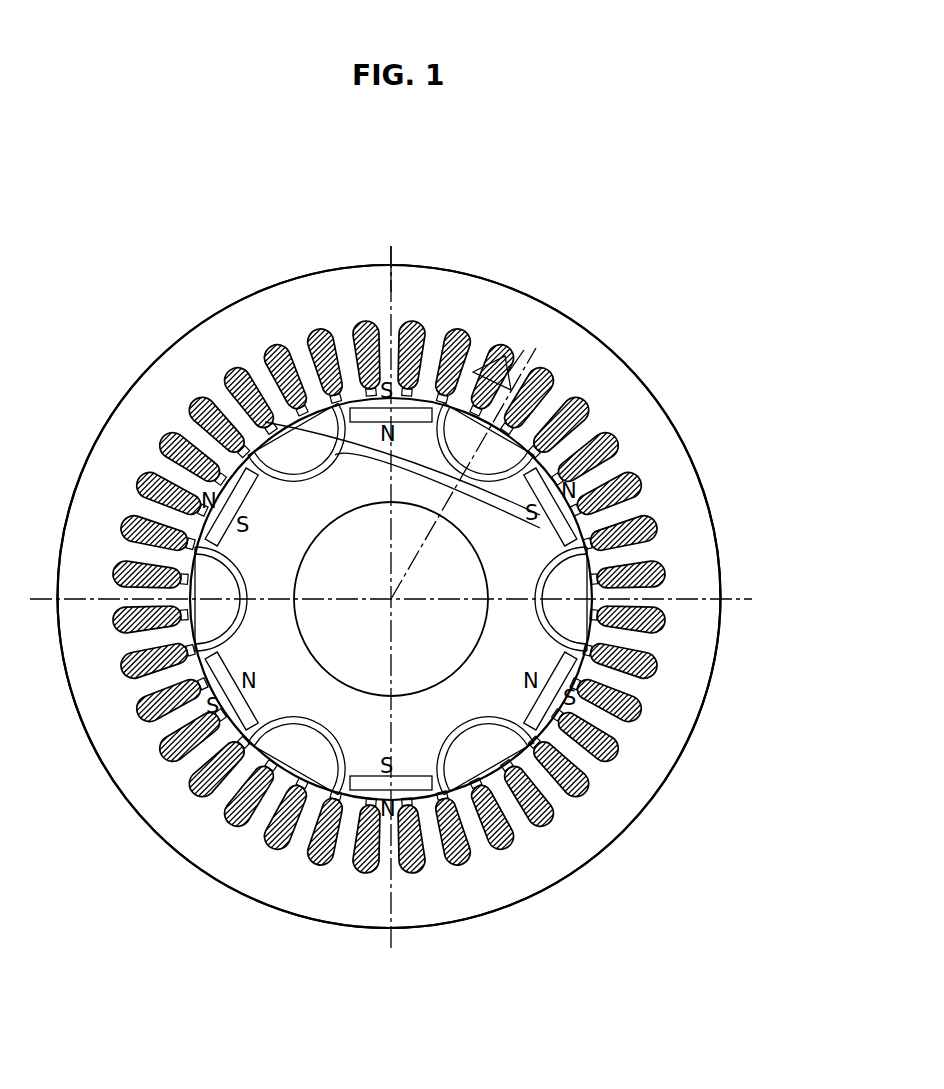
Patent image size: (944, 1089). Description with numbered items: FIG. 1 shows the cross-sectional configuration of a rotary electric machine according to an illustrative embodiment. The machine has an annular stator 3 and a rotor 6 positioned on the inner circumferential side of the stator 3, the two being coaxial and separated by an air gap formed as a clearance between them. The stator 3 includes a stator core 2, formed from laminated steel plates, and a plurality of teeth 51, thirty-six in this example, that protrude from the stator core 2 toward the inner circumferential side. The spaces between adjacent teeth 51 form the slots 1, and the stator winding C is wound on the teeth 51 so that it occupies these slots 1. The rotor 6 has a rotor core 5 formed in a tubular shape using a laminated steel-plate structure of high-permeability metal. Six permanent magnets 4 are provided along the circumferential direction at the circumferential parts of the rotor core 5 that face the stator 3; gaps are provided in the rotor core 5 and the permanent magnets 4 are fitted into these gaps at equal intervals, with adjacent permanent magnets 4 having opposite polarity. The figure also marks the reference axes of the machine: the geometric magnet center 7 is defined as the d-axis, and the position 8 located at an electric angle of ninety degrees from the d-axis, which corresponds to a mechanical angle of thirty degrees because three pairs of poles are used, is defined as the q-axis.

The slots 1 is at (463, 330).
The stator core 2 is at (440, 286).
The stator 3 is at (343, 297).
The permanent magnets 4 is at (300, 470).
The rotor core 5 is at (320, 490).
The teeth 51 is at (177, 485).
The rotor 6 is at (200, 405).
The geometric magnet center 7 is at (393, 246).
The position 8 is at (558, 298).
The stator winding C is at (670, 616).